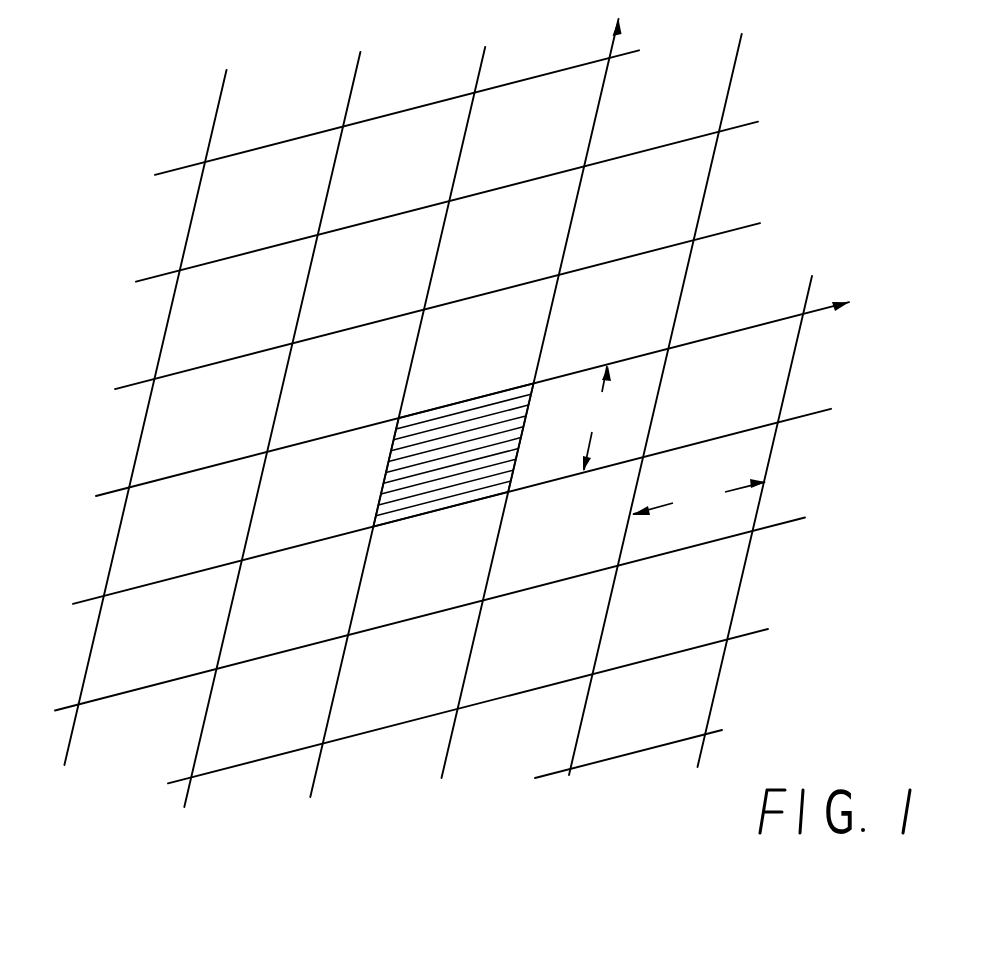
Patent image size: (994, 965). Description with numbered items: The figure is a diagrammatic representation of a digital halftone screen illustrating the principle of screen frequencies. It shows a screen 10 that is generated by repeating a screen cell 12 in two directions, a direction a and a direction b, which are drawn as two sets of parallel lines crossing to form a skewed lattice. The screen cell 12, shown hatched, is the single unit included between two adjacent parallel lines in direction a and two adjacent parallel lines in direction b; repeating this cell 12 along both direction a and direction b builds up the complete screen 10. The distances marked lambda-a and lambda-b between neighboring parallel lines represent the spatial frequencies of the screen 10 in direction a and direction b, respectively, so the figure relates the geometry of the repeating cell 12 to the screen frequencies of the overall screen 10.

The screen 10 is at (466, 406).
The screen cell 12 is at (434, 506).
The direction a is at (476, 399).
The direction b is at (544, 392).